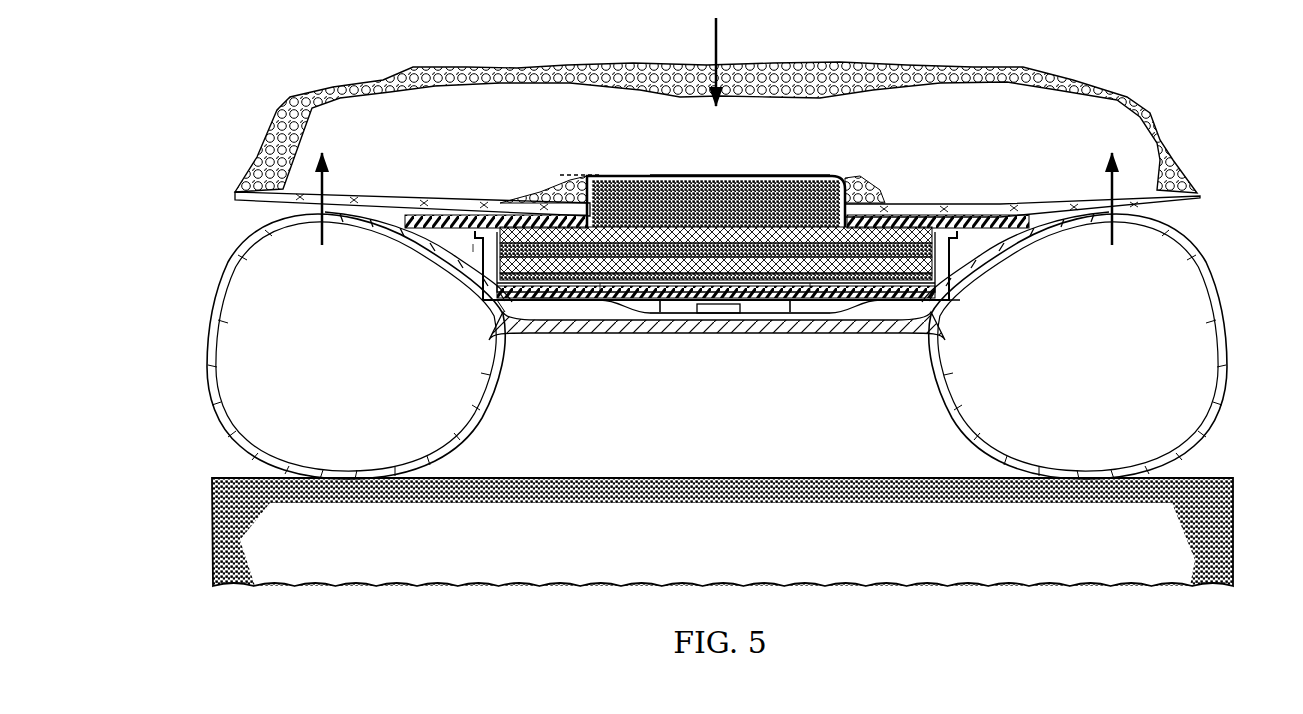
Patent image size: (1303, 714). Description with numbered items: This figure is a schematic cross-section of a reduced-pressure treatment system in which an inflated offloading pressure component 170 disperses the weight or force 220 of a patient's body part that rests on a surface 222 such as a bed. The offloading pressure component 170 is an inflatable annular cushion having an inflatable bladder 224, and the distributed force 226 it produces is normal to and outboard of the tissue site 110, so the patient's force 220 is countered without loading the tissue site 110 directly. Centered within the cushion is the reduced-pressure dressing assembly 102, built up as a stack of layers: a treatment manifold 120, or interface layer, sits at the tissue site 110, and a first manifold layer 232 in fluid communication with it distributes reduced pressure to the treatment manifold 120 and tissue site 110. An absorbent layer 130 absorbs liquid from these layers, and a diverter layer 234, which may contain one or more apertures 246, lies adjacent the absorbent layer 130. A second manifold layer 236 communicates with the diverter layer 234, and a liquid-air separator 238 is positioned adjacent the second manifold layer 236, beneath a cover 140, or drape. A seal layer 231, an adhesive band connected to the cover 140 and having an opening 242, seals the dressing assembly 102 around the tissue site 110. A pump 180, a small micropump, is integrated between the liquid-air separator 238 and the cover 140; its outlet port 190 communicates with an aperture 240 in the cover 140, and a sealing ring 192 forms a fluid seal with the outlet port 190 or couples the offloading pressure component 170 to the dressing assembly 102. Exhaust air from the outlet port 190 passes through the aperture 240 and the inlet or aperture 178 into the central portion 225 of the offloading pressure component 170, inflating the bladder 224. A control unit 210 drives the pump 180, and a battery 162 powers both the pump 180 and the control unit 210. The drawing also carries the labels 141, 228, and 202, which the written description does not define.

The weight or force 220 is at (719, 42).
The housing top surface 141 is at (597, 170).
The tissue site 110 is at (625, 176).
The reduced-pressure dressing assembly 102 is at (771, 175).
The opening 242 is at (820, 198).
The first manifold layer 232 is at (918, 225).
The seal layer 231 is at (985, 215).
The force 226 is at (330, 185).
The inflatable bladder 224 is at (237, 270).
The offloading pressure component 170 is at (1188, 252).
The diverter layer 234 is at (413, 237).
The gap 228 is at (468, 248).
The absorbent layer 130 is at (487, 258).
The tire cavity 202 is at (330, 359).
The apertures 246 is at (510, 287).
The second manifold layer 236 is at (547, 297).
The battery 162 is at (587, 300).
The aperture 240 is at (633, 282).
The sealing ring 192 is at (647, 300).
The pump 180 is at (688, 290).
The inlet or aperture 178 is at (720, 308).
The outlet port 190 is at (750, 300).
The control unit 210 is at (822, 282).
The central portion 225 is at (870, 326).
The cover 140 is at (950, 270).
The liquid-air separator 238 is at (927, 300).
The surface 222 is at (702, 542).
The treatment manifold 120 is at (703, 219).